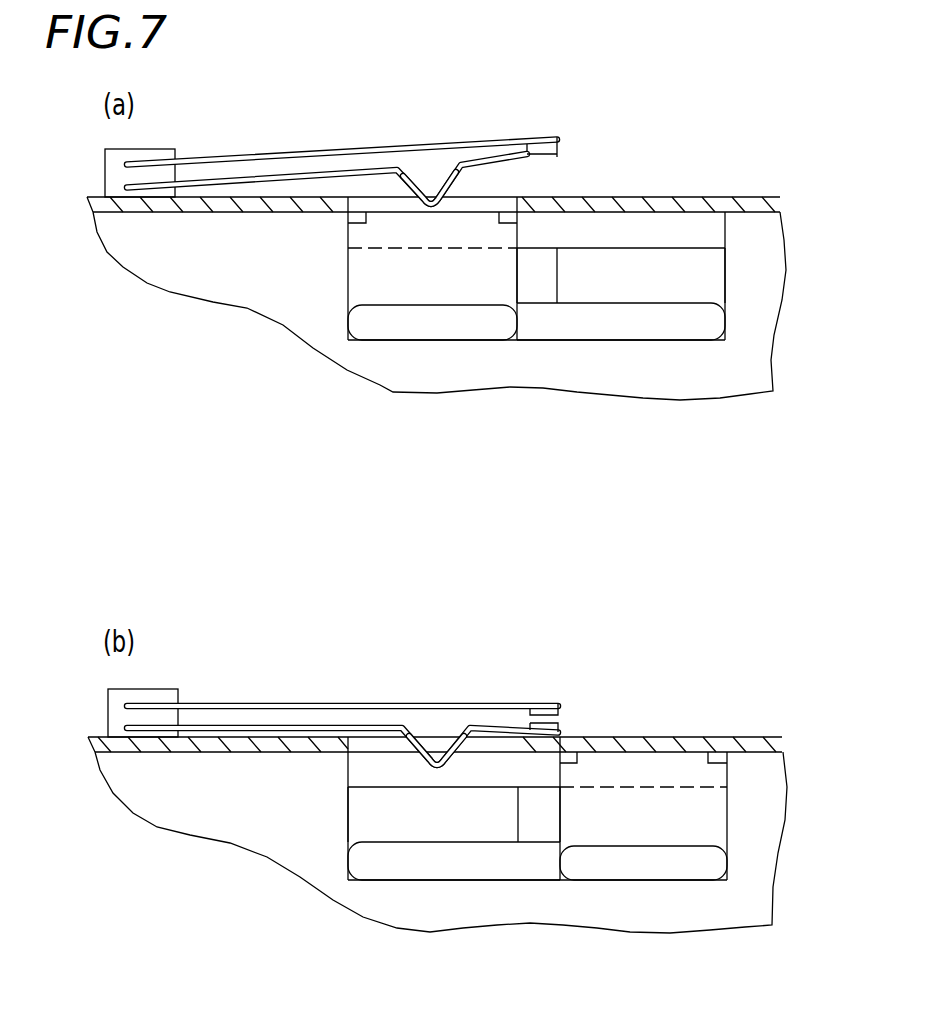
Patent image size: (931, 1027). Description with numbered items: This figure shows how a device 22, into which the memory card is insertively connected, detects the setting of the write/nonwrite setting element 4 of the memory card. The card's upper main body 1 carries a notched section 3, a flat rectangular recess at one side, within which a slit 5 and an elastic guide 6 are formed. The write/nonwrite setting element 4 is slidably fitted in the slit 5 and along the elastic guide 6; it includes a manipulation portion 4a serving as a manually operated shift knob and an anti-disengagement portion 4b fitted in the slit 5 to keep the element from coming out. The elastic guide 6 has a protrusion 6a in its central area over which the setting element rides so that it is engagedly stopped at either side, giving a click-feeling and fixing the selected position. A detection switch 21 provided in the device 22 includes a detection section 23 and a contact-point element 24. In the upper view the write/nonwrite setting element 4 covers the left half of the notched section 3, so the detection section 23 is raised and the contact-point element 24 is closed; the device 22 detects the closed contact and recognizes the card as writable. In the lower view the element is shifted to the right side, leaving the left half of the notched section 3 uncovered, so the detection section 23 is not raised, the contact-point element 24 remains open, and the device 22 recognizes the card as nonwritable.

The upper main body 1 is at (757, 286).
The notched section 3 is at (597, 237).
The write/nonwrite setting element 4 is at (537, 546).
The manipulation portion 4a is at (408, 232).
The anti-disengagement portion 4b is at (442, 323).
The slit 5 is at (632, 328).
The elastic guide 6 is at (536, 617).
The protrusion 6a is at (537, 288).
The detection switch 21 is at (565, 82).
The device 22 is at (197, 205).
The detection section 23 is at (432, 205).
The contact-point element 24 is at (540, 147).